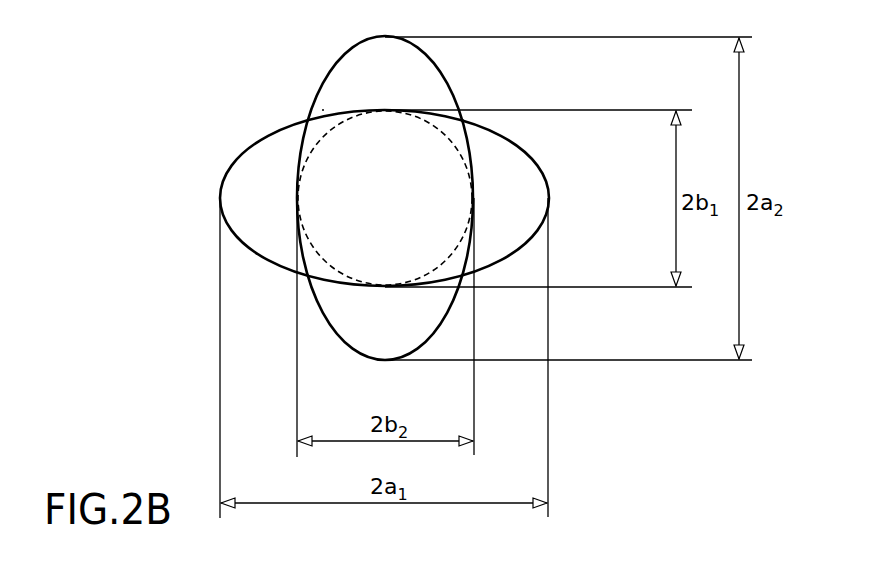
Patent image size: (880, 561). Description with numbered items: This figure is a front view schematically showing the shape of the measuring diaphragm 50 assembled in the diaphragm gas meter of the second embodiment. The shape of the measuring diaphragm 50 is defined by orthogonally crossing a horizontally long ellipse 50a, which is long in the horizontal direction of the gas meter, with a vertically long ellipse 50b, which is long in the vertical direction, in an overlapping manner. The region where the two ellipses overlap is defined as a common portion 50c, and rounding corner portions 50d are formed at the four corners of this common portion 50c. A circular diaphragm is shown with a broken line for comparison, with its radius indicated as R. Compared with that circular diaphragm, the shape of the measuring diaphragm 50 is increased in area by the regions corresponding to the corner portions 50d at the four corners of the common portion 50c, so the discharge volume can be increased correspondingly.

The measuring diaphragm 50 is at (325, 108).
The horizontally long ellipse 50a is at (540, 158).
The vertically long ellipse 50b is at (452, 76).
The common portion 50c is at (458, 213).
The corner portions 50d is at (468, 119).
The radius of inscribed circle R is at (458, 125).